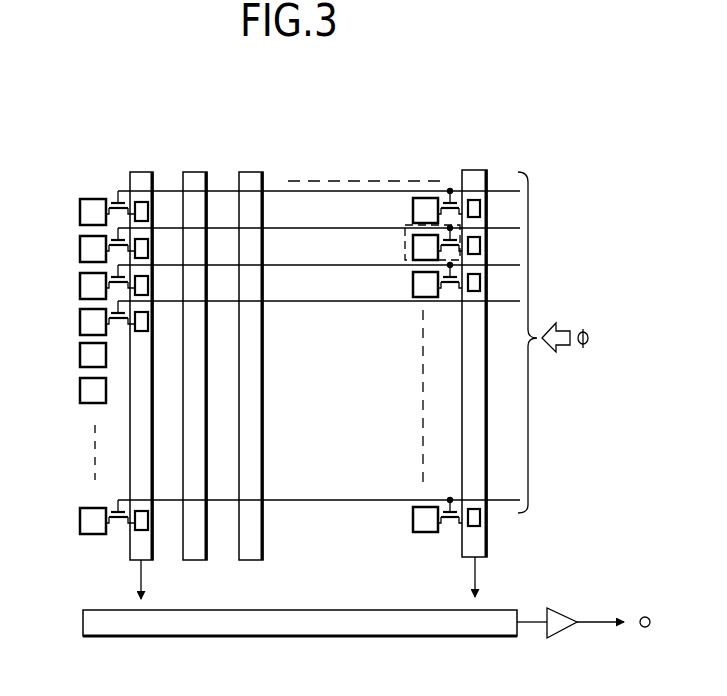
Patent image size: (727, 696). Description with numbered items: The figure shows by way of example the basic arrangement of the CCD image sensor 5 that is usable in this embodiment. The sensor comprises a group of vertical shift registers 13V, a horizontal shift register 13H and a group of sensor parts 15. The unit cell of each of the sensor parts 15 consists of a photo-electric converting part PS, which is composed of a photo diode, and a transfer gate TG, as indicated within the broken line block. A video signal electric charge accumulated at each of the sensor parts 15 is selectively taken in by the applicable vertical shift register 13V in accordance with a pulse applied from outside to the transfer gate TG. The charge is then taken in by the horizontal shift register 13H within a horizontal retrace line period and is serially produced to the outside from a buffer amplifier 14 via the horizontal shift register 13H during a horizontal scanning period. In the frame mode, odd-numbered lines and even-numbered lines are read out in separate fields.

The CCD image sensor 5 is at (348, 134).
The vertical shift registers 13V is at (246, 168).
The horizontal shift register 13H is at (258, 628).
The buffer amplifier 14 is at (561, 608).
The sensor parts 15 is at (458, 258).
The photo-electric converting part PS is at (412, 243).
The transfer gate TG is at (447, 257).